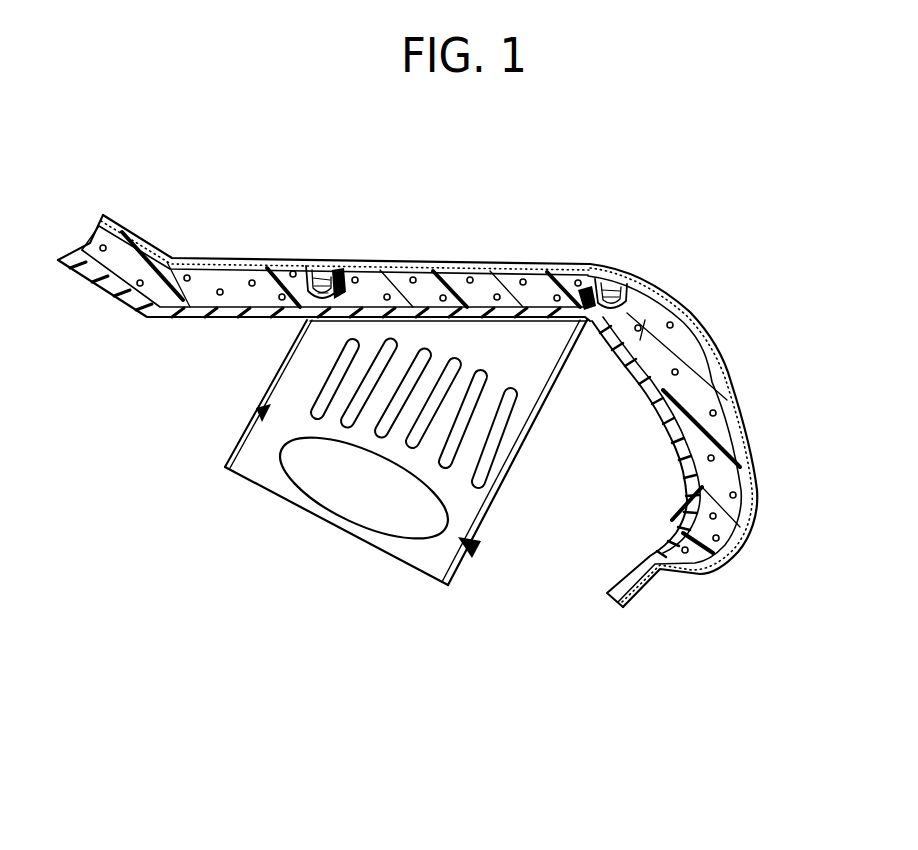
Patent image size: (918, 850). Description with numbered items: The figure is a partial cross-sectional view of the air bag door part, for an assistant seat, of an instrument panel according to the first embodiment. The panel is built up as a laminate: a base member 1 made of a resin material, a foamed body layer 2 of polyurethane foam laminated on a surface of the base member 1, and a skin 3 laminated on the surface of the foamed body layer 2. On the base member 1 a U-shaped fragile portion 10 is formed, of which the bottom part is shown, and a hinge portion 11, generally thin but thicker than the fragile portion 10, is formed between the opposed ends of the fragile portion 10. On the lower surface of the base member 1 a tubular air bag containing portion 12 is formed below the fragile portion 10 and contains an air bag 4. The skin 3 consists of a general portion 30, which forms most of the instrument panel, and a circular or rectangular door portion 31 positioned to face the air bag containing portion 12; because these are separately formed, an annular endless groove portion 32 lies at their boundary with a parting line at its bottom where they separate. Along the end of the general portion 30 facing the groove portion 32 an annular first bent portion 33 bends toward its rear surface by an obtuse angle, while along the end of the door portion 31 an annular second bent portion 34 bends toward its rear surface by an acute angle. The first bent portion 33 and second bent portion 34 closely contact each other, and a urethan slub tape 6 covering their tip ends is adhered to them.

The base member 1 is at (403, 276).
The foamed body layer 2 is at (232, 272).
The skin 3 is at (708, 421).
The air bag 4 is at (397, 517).
The urethan slub tape 6 is at (278, 315).
The fragile portion 10 is at (366, 483).
The hinge portion 11 is at (326, 318).
The air bag containing portion 12 is at (487, 513).
The general portion 30 is at (738, 401).
The door portion 31 is at (440, 256).
The groove portion 32 is at (312, 262).
The first bent portion 33 is at (298, 268).
The second bent portion 34 is at (356, 262).